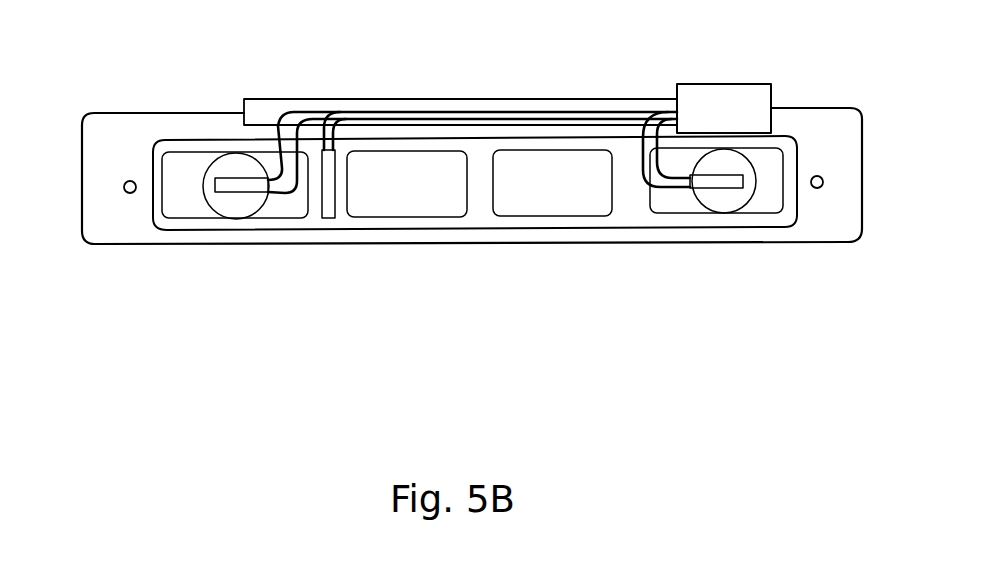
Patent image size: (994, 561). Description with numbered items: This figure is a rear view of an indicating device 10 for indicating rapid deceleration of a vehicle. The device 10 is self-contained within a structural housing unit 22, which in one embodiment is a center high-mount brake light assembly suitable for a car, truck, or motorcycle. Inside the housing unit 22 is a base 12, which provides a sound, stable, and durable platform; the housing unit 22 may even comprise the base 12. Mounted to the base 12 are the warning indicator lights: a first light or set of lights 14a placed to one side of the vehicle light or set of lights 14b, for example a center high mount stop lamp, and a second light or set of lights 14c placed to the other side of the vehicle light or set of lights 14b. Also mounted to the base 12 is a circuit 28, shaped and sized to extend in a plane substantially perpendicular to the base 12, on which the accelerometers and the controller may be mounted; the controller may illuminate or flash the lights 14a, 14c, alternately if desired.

The indicating device 10 is at (656, 78).
The base 12 is at (128, 125).
The first light or set of lights 14a is at (763, 202).
The vehicle light or set of lights 14b is at (403, 170).
The second light or set of lights 14c is at (185, 202).
The housing unit 22 is at (150, 208).
The circuit 28 is at (328, 218).